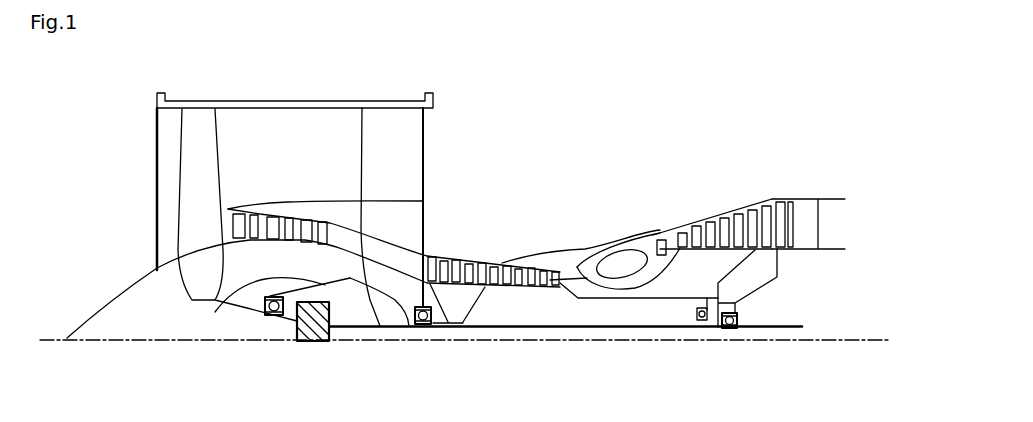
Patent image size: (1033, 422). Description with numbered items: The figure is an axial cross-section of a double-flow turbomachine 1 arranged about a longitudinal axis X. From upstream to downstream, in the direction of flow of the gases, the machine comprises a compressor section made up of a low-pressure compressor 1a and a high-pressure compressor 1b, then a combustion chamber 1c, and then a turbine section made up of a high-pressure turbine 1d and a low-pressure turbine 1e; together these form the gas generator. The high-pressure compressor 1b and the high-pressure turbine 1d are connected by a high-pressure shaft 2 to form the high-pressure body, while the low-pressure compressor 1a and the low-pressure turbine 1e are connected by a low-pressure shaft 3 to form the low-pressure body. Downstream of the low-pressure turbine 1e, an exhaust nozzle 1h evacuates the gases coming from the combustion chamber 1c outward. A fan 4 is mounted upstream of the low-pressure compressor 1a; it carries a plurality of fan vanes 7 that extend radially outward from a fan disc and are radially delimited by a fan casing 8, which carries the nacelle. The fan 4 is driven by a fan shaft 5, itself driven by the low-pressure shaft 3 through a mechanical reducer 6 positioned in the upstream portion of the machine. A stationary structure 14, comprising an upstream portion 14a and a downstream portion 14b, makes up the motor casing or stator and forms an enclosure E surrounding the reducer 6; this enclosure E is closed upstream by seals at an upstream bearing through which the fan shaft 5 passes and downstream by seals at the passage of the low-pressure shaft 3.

The double-flow turbomachine 1 is at (553, 143).
The low-pressure compressor 1a is at (232, 210).
The high-pressure compressor 1b is at (462, 257).
The combustion chamber 1c is at (616, 258).
The high-pressure turbine 1d is at (693, 312).
The low-pressure turbine 1e is at (777, 203).
The exhaust nozzle 1h is at (830, 228).
The high-pressure shaft 2 is at (593, 298).
The low-pressure shaft 3 is at (514, 330).
The fan 4 is at (152, 215).
The fan shaft 5 is at (258, 315).
The mechanical reducer 6 is at (313, 342).
The fan vanes 7 is at (190, 163).
The fan casing 8 is at (232, 108).
The stationary structure 14 is at (343, 272).
The upstream portion 14a is at (215, 312).
The downstream portion 14b is at (408, 327).
The enclosure E is at (338, 302).
The longitudinal axis X is at (67, 338).